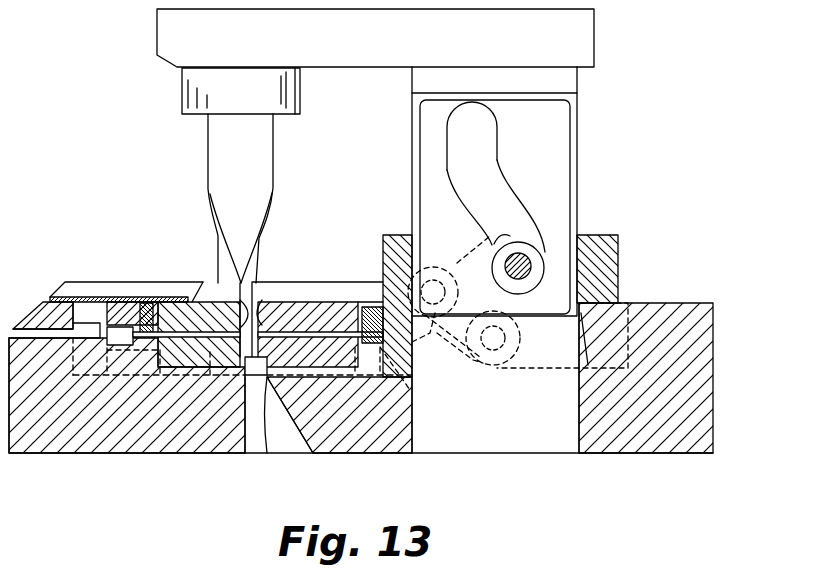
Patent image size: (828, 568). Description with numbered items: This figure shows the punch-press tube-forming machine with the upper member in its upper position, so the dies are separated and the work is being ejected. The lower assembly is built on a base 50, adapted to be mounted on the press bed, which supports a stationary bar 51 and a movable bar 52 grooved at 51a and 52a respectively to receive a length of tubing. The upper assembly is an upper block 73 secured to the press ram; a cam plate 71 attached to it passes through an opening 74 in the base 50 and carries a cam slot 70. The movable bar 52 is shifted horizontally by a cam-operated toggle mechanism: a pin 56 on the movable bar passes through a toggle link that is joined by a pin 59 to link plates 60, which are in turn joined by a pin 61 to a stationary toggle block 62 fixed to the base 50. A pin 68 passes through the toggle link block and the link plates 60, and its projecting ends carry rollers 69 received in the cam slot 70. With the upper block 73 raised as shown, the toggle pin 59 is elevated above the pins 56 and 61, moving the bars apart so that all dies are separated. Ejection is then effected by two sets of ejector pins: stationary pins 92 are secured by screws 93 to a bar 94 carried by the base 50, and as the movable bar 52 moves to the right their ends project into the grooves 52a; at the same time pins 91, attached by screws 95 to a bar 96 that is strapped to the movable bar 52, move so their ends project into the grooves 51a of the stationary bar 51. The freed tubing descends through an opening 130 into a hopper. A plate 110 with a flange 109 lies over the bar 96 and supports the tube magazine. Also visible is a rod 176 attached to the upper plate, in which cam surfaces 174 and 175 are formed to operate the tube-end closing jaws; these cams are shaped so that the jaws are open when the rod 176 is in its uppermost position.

The base 50 is at (147, 453).
The opening 130 is at (263, 453).
The opening 74 is at (526, 441).
The upper block 73 is at (157, 29).
The rod 176 is at (207, 140).
The cam surface 174 is at (218, 232).
The cam surface 175 is at (262, 238).
The cam plate 71 is at (578, 190).
The cam slot 70 is at (483, 143).
The link plates 60 is at (500, 236).
The roller 69 is at (540, 280).
The pin 68 is at (530, 264).
The pin 59 is at (441, 268).
The pin 61 is at (492, 362).
The toggle block 62 is at (547, 370).
The pin 56 is at (410, 390).
The stationary bar 51 is at (203, 282).
The groove 51a is at (212, 292).
The movable bar 52 is at (330, 272).
The groove 52a is at (317, 290).
The flange 109 is at (72, 282).
The plate 110 is at (52, 298).
The bar 96 is at (116, 298).
The screws 95 is at (146, 298).
The ejector pins 91 is at (135, 338).
The ejector pins 92 is at (258, 353).
The screws 93 is at (370, 300).
The bar 94 is at (366, 302).